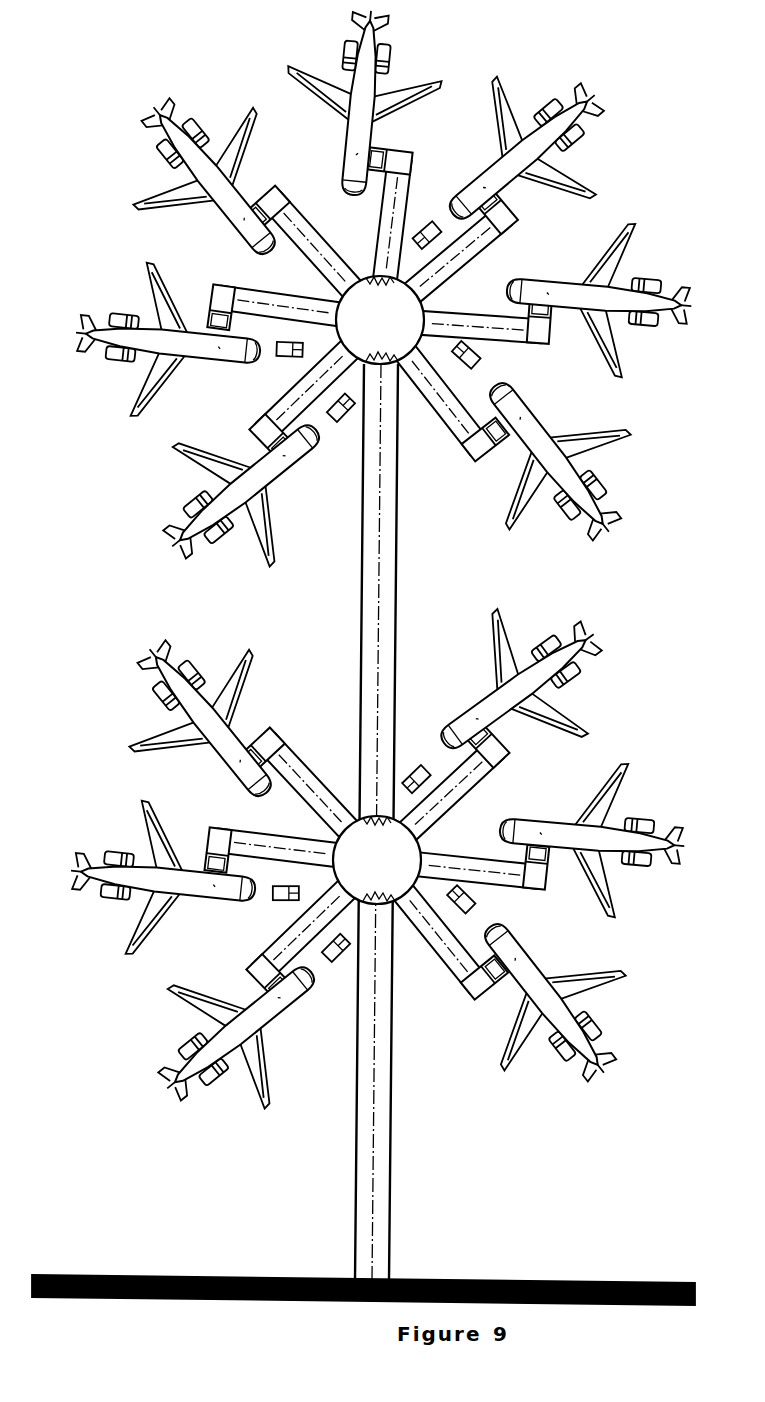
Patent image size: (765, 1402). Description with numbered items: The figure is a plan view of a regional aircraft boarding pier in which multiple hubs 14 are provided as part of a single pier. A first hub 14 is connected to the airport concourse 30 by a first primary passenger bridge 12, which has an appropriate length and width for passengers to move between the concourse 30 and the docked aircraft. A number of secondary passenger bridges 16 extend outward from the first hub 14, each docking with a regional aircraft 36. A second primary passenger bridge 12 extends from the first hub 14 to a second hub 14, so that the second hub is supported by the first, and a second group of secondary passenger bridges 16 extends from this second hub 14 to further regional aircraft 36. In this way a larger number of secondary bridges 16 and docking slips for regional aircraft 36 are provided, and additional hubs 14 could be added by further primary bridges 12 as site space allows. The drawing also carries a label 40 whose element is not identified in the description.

The primary passenger bridge 12 is at (389, 604).
The hub 14 is at (391, 343).
The secondary passenger bridge 16 is at (462, 421).
The airport concourse 30 is at (292, 1326).
The regional aircraft 36 is at (517, 497).
The amusement ride assembly 40 is at (365, 665).